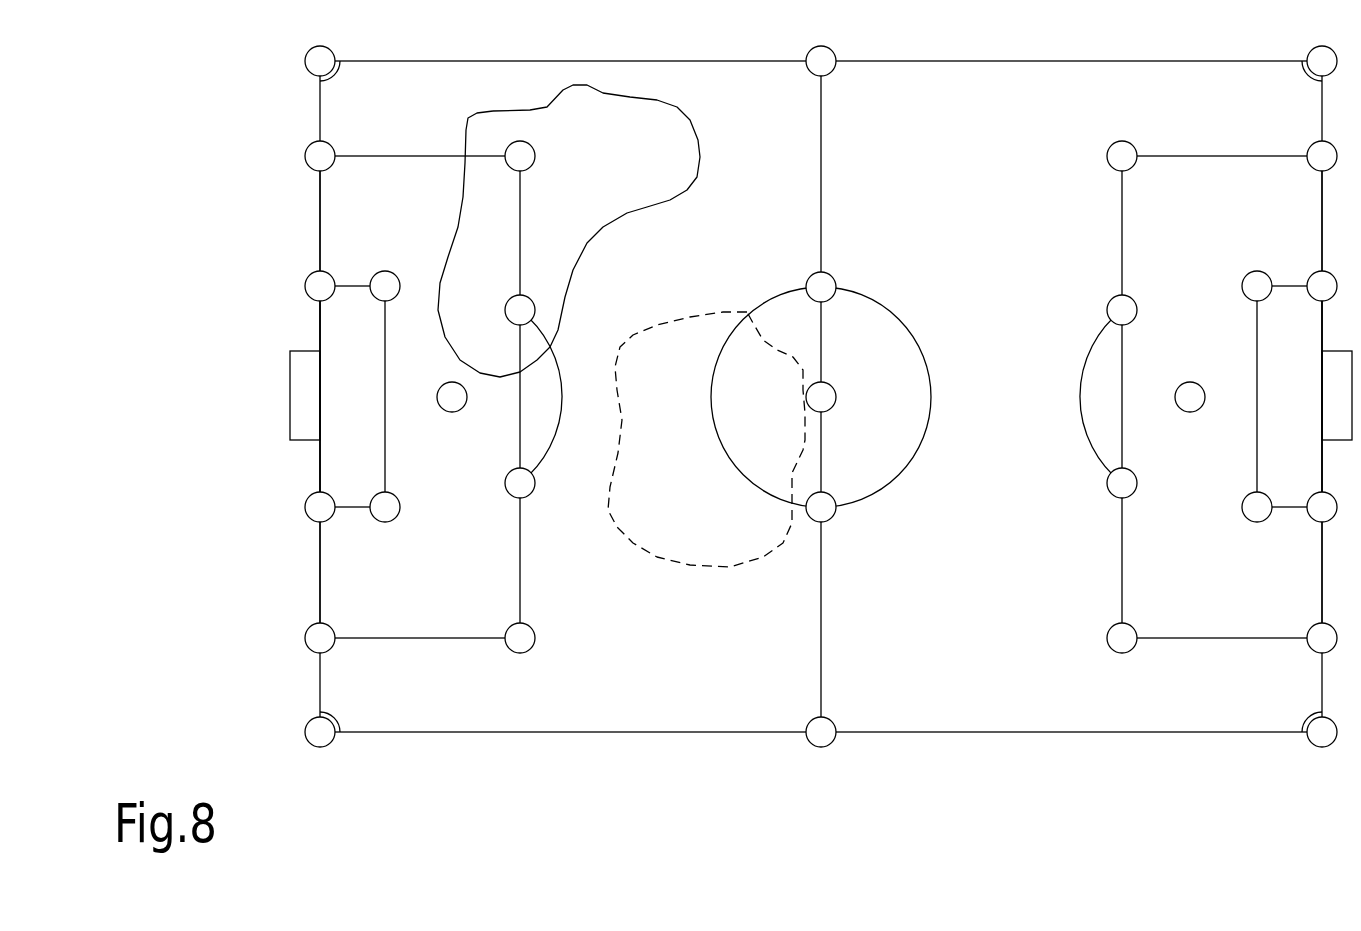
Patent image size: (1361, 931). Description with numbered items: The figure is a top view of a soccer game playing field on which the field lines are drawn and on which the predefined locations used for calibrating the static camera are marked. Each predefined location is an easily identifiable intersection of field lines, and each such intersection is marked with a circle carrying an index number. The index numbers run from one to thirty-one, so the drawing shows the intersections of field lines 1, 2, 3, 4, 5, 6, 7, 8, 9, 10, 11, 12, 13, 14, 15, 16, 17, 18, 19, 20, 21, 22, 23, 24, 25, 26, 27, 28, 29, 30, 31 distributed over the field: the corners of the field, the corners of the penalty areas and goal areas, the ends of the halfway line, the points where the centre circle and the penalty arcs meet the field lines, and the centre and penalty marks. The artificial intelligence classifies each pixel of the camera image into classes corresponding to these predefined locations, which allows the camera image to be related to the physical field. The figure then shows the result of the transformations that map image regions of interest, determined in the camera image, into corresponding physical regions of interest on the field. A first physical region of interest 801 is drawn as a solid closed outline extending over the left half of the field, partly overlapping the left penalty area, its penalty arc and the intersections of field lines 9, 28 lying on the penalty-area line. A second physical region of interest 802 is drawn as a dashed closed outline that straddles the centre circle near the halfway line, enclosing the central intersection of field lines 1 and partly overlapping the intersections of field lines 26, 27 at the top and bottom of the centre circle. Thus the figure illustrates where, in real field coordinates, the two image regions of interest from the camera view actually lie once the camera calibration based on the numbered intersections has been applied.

The intersection of field lines 1 is at (821, 397).
The intersection of field lines 2 is at (452, 397).
The intersection of field lines 3 is at (1190, 397).
The intersection of field lines 4 is at (320, 61).
The intersection of field lines 5 is at (1322, 61).
The intersection of field lines 6 is at (320, 732).
The intersection of field lines 7 is at (1322, 732).
The intersection of field lines 8 is at (320, 156).
The intersection of field lines 9 is at (520, 156).
The intersection of field lines 10 is at (320, 638).
The intersection of field lines 11 is at (520, 638).
The intersection of field lines 12 is at (1122, 156).
The intersection of field lines 13 is at (1322, 156).
The intersection of field lines 14 is at (1122, 638).
The intersection of field lines 15 is at (1322, 638).
The intersection of field lines 16 is at (320, 286).
The intersection of field lines 17 is at (385, 286).
The intersection of field lines 18 is at (320, 507).
The intersection of field lines 19 is at (385, 507).
The intersection of field lines 20 is at (1257, 286).
The intersection of field lines 21 is at (1322, 286).
The intersection of field lines 22 is at (1257, 507).
The intersection of field lines 23 is at (1322, 507).
The intersection of field lines 24 is at (821, 61).
The intersection of field lines 25 is at (821, 732).
The intersection of field lines 26 is at (821, 287).
The intersection of field lines 27 is at (821, 507).
The intersection of field lines 28 is at (520, 310).
The intersection of field lines 29 is at (1122, 310).
The intersection of field lines 30 is at (520, 483).
The intersection of field lines 31 is at (1122, 483).
The physical region of interest 801 is at (590, 231).
The physical region of interest 802 is at (706, 499).